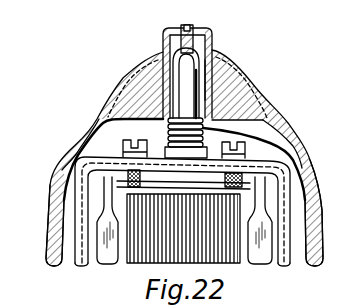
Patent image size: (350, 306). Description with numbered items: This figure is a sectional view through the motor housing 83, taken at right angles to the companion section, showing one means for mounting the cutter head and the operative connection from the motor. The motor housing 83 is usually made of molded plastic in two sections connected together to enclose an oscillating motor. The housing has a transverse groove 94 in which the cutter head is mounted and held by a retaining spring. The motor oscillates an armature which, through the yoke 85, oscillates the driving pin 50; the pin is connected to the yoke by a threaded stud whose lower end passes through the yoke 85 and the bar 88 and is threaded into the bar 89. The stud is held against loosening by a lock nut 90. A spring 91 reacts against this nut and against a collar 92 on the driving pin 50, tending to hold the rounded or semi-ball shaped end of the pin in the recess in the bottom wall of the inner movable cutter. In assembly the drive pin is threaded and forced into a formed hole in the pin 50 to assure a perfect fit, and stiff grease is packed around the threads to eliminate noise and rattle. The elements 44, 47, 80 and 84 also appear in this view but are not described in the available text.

The terminal stud 44 is at (189, 26).
The cap 47 is at (163, 40).
The driving pin 50 is at (178, 81).
The housing dome 80 is at (215, 107).
The motor housing 83 is at (52, 166).
The heating element 84 is at (143, 252).
The yoke 85 is at (84, 202).
The bar 88 is at (117, 170).
The bar 89 is at (252, 162).
The lock nut 90 is at (205, 153).
The spring 91 is at (95, 117).
The collar 92 is at (147, 112).
The transverse groove 94 is at (210, 80).